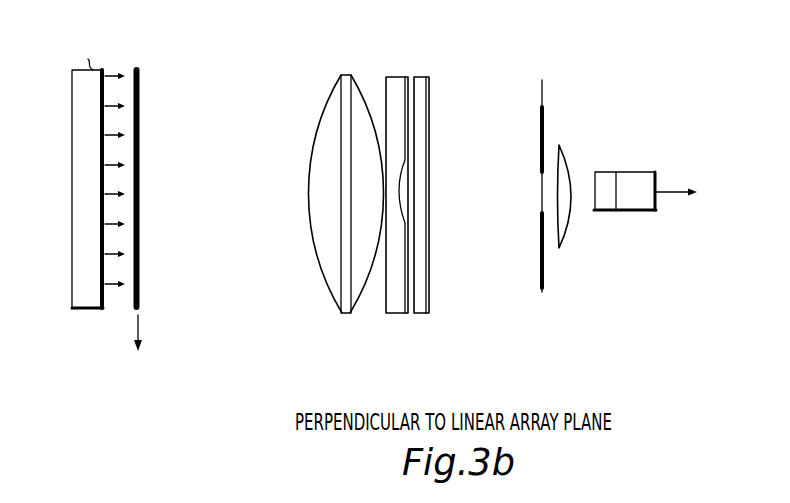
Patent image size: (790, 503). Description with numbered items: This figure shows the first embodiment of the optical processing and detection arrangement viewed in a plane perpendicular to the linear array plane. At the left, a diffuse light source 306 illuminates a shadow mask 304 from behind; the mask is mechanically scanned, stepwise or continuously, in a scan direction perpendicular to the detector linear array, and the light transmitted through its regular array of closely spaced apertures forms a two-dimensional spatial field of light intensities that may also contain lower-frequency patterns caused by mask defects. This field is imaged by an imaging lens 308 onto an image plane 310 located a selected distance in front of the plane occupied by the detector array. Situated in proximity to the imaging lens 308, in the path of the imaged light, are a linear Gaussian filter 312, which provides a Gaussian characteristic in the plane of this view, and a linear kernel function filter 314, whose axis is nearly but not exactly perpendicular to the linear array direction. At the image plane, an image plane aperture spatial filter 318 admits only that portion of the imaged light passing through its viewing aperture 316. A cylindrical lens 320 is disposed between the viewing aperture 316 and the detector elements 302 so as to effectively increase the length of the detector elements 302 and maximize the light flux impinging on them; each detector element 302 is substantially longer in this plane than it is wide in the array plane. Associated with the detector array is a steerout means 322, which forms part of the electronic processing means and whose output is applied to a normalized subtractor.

The detector element 302 is at (604, 172).
The shadow mask 304 is at (140, 79).
The diffuse light source 306 is at (73, 213).
The imaging lens 308 is at (330, 89).
The image plane 310 is at (543, 290).
The linear Gaussian filter 312 is at (397, 76).
The linear kernel function filter 314 is at (431, 85).
The viewing aperture 316 is at (537, 192).
The image plane aperture spatial filter 318 is at (543, 84).
The cylindrical lens 320 is at (571, 220).
The steerout means 322 is at (643, 211).